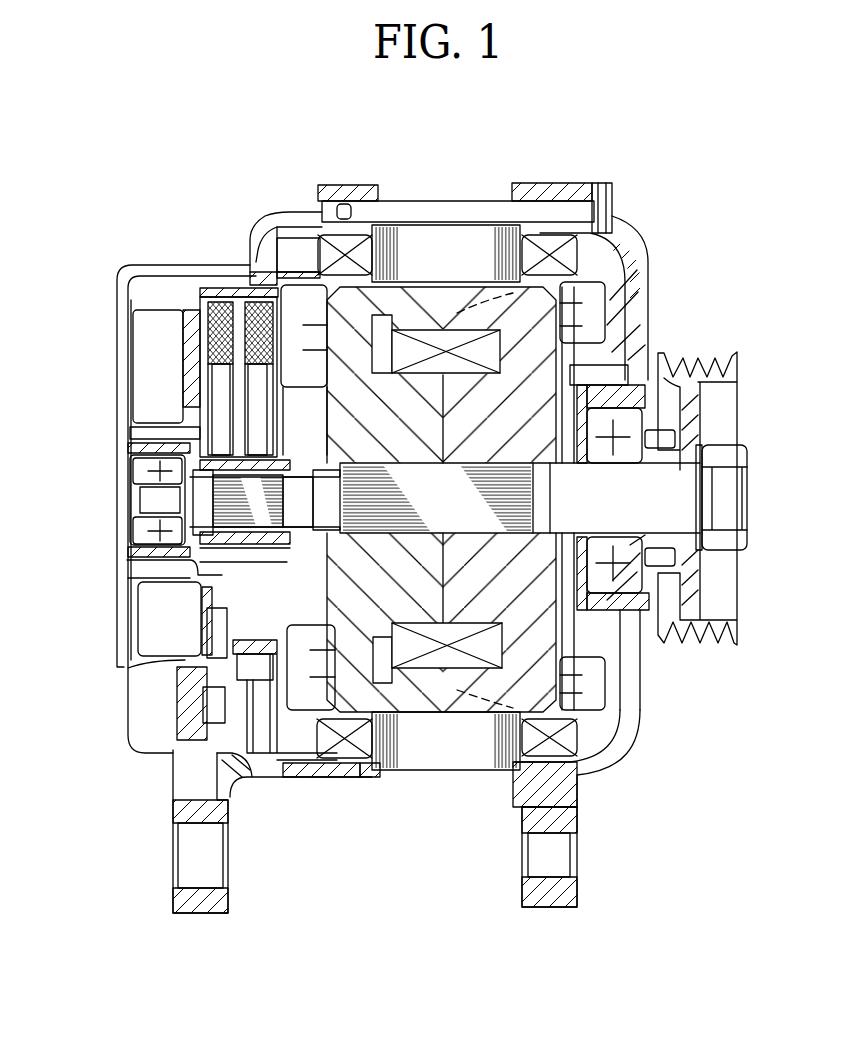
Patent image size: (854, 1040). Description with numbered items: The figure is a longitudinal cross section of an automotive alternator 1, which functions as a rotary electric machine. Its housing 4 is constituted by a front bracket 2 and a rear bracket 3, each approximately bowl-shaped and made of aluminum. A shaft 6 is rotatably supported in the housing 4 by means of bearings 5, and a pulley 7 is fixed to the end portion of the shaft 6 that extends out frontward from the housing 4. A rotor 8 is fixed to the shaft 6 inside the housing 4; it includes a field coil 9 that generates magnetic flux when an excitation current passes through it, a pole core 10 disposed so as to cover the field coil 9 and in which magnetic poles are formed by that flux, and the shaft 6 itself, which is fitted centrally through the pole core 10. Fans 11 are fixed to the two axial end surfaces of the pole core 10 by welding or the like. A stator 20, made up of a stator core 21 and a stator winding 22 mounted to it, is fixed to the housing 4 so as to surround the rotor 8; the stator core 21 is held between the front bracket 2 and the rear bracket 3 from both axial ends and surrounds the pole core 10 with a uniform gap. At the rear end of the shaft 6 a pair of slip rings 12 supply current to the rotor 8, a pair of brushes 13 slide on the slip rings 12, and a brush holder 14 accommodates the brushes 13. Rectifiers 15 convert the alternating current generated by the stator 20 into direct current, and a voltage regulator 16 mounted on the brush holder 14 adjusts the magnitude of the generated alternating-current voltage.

The automotive alternator 1 is at (48, 139).
The front bracket 2 is at (642, 262).
The rear bracket 3 is at (247, 240).
The housing 4 is at (640, 233).
The bearings 5 is at (143, 473).
The shaft 6 is at (683, 498).
The pulley 7 is at (703, 355).
The rotor 8 is at (478, 146).
The field coil 9 is at (428, 337).
The pole core 10 is at (472, 293).
The fans 11 is at (593, 302).
The slip rings 12 is at (290, 458).
The brushes 13 is at (257, 415).
The brush holder 14 is at (200, 297).
The rectifiers 15 is at (218, 661).
The voltage regulator 16 is at (187, 337).
The stator 20 is at (433, 817).
The stator core 21 is at (450, 752).
The stator winding 22 is at (548, 747).